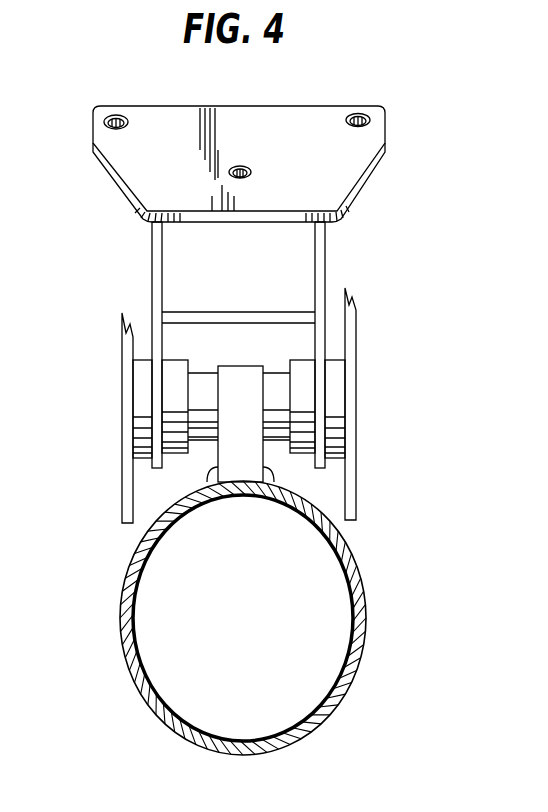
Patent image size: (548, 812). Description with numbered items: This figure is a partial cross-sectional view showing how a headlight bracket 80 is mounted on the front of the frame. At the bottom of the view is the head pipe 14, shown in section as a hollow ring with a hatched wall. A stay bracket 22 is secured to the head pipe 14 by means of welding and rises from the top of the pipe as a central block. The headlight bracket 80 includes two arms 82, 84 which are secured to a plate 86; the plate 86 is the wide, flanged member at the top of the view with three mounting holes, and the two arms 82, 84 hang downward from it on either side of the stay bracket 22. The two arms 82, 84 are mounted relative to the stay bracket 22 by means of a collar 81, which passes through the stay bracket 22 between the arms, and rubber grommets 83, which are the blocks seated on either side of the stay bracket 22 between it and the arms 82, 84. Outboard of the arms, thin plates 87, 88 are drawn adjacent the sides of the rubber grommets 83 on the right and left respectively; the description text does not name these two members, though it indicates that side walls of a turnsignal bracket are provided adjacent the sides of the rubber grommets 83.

The headlight bracket 80 is at (288, 91).
The plate 86 is at (325, 160).
The arm 84 is at (153, 272).
The arm 82 is at (325, 258).
The left outer plate 88 is at (127, 393).
The right outer plate 87 is at (352, 400).
The rubber grommets 83 is at (175, 425).
The collar 81 is at (203, 378).
The stay bracket 22 is at (252, 457).
The head pipe 14 is at (360, 652).